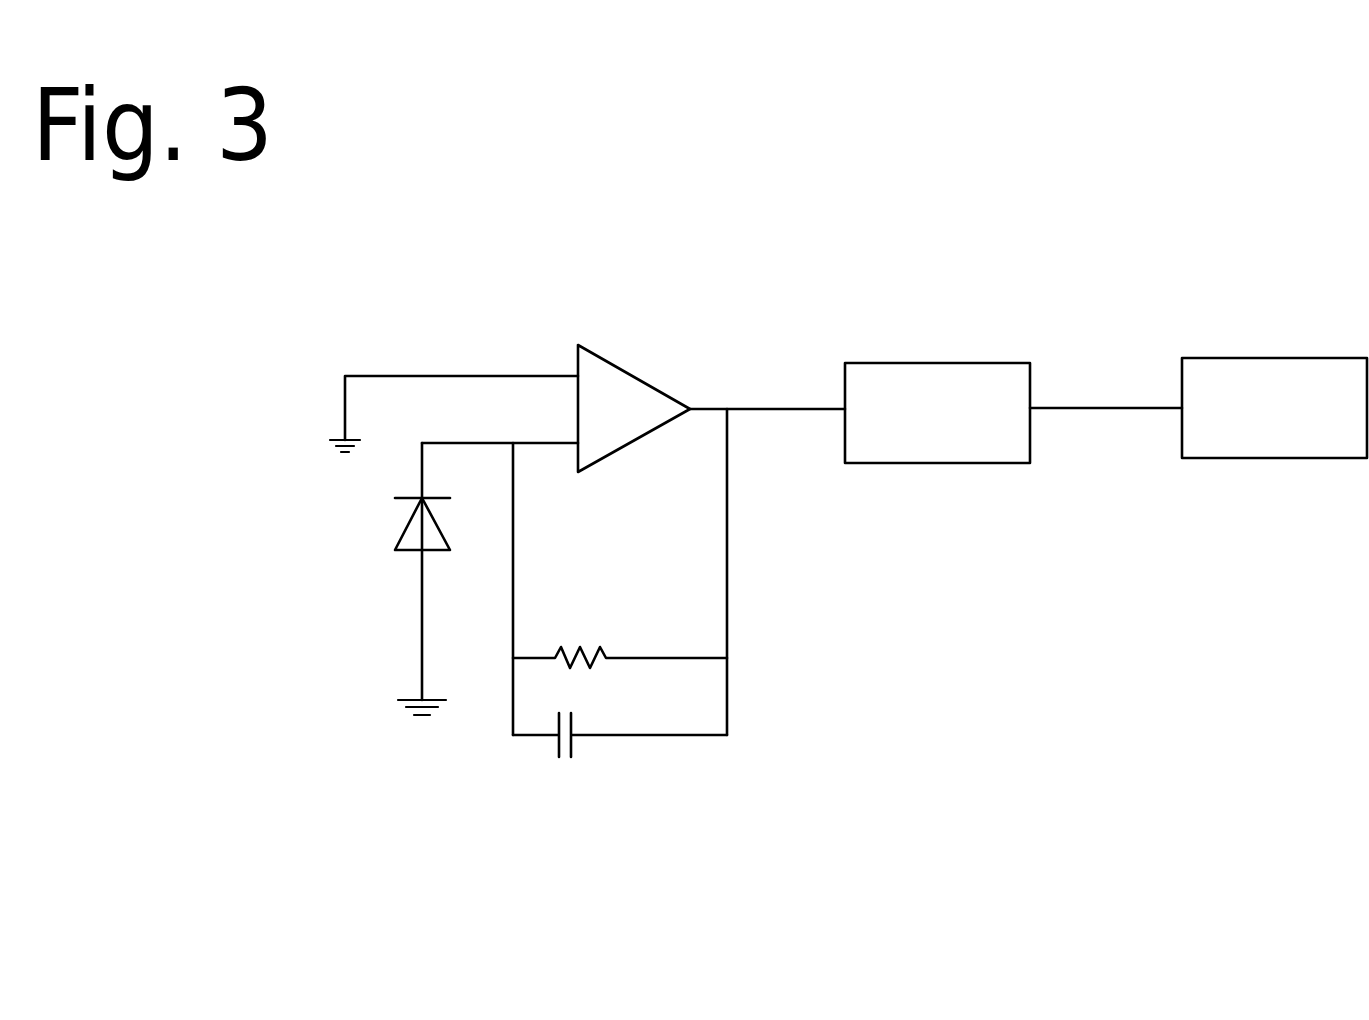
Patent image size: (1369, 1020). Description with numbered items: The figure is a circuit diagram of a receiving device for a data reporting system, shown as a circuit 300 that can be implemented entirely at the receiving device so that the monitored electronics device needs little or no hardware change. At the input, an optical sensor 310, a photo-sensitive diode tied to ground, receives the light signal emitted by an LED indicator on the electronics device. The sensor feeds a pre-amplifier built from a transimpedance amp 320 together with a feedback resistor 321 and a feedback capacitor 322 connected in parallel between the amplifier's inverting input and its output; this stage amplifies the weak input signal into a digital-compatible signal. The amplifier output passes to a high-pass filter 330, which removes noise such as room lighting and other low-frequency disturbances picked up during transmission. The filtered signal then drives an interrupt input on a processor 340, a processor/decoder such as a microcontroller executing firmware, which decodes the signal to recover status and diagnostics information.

The circuit 300 is at (850, 212).
The optical sensor 310 is at (403, 551).
The transimpedance amp 320 is at (651, 383).
The resistor 321 is at (596, 648).
The capacitor 322 is at (558, 748).
The high-pass filter 330 is at (966, 465).
The processor 340 is at (1276, 460).